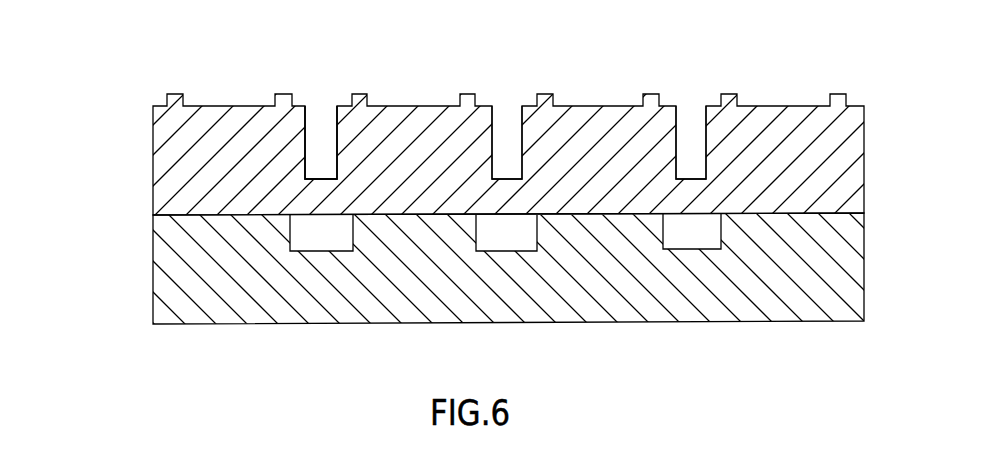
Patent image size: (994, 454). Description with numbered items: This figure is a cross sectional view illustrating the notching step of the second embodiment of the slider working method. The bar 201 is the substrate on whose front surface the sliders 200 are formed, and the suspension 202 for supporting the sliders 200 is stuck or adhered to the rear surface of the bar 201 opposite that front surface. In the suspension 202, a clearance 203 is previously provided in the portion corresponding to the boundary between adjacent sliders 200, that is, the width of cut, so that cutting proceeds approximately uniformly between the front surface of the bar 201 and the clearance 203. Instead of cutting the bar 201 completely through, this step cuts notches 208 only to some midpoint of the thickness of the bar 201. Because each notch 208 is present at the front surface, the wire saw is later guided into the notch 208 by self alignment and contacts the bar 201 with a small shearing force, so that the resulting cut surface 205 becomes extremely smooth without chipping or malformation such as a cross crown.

The slider 200 is at (213, 123).
The bar 201 is at (128, 170).
The suspension 202 is at (153, 268).
The clearance 203 is at (318, 233).
The cut surface 205 is at (320, 150).
The notch 208 is at (318, 150).